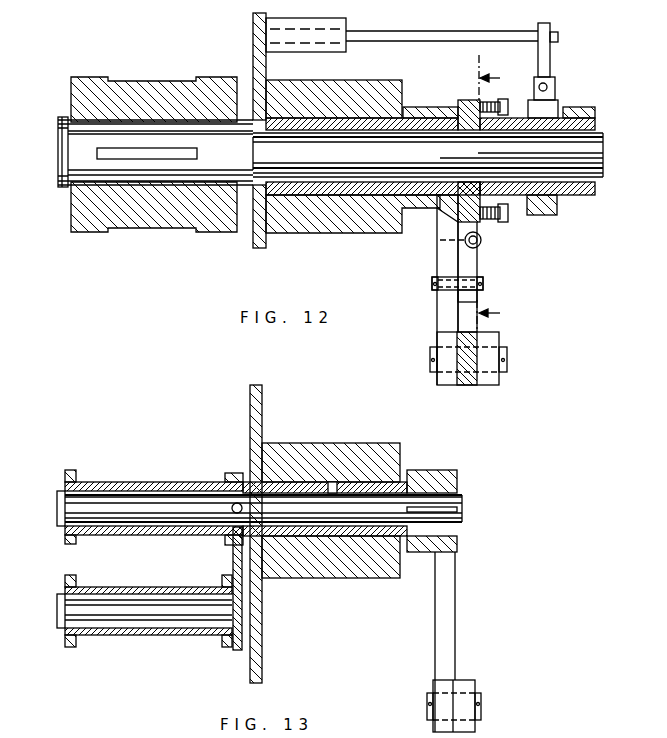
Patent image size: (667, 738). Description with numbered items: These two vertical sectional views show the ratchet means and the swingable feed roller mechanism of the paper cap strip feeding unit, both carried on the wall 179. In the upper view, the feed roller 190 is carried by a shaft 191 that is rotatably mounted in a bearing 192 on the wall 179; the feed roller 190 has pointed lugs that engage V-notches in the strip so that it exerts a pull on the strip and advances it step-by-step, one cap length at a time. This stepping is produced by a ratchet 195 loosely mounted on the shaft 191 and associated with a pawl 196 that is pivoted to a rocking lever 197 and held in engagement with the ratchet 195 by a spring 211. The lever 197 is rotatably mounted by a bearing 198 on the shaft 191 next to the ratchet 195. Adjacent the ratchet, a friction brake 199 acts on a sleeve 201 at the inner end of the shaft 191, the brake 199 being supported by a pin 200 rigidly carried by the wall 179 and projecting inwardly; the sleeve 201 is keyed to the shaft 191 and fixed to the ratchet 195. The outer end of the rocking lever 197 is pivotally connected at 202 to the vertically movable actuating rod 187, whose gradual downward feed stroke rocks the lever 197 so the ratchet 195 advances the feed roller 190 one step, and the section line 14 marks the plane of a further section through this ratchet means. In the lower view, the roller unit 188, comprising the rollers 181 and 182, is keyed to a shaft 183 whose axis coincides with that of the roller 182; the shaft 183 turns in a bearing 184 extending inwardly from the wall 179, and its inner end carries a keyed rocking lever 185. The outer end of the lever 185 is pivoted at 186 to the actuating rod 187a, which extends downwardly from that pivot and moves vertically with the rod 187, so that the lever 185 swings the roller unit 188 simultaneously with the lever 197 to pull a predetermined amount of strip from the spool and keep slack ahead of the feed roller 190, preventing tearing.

In FIG. 12, the section line 14— 14 is at (500, 193).
In FIG. 12, the wall 179 is at (253, 246).
In FIG. 13, the wall 179 is at (250, 403).
In FIG. 13, the roller 181 is at (128, 632).
In FIG. 13, the roller 182 is at (133, 481).
In FIG. 13, the shaft 183 is at (219, 503).
In FIG. 13, the bearing 184 is at (365, 574).
In FIG. 13, the rocking lever 185 is at (447, 598).
In FIG. 13, the pivot 186 is at (462, 685).
In FIG. 12, the actuating rod 187 is at (490, 386).
In FIG. 12, the actuating rod 187a is at (465, 387).
In FIG. 13, the actuating rod 187a is at (481, 703).
In FIG. 13, the roller unit 188 is at (233, 563).
In FIG. 12, the feed roller 190 is at (91, 78).
In FIG. 12, the shaft 191 is at (80, 148).
In FIG. 12, the bearing 192 is at (335, 232).
In FIG. 12, the ratchet 195 is at (462, 105).
In FIG. 12, the pawl 196 is at (470, 268).
In FIG. 12, the rocking lever 197 is at (447, 258).
In FIG. 12, the bearing 198 is at (415, 107).
In FIG. 12, the friction brake 199 is at (551, 98).
In FIG. 12, the pin 200 is at (465, 34).
In FIG. 12, the sleeve 201 is at (597, 128).
In FIG. 12, the pivotal connection 202 is at (506, 354).
In FIG. 12, the spring 211 is at (482, 240).